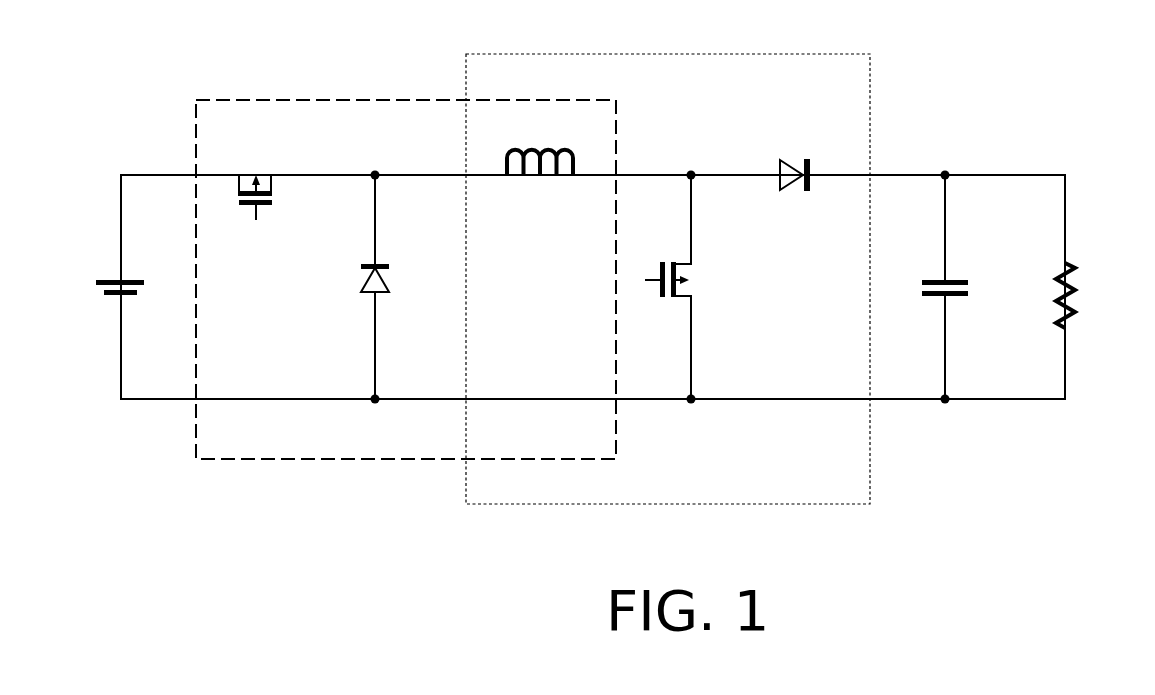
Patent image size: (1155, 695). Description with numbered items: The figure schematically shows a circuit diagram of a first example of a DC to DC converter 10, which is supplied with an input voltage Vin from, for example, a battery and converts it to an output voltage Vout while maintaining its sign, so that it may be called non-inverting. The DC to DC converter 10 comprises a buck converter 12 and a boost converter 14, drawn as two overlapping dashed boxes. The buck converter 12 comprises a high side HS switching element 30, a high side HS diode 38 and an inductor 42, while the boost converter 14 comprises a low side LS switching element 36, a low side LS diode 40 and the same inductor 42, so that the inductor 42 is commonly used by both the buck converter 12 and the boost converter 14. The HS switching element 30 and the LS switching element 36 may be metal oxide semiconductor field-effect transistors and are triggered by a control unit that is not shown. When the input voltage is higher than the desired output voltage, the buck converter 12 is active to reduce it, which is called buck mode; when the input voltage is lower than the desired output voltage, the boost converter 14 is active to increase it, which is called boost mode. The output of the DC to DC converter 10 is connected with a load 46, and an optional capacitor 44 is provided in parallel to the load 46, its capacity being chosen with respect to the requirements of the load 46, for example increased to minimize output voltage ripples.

The DC to DC converter 10 is at (598, 300).
The buck converter 12 is at (335, 100).
The boost converter 14 is at (776, 54).
The HS switching element 30 is at (264, 172).
The LS switching element 36 is at (690, 289).
The HS diode 38 is at (362, 287).
The LS diode 40 is at (788, 192).
The inductor 42 is at (525, 180).
The capacitor 44 is at (958, 278).
The load 46 is at (1080, 280).